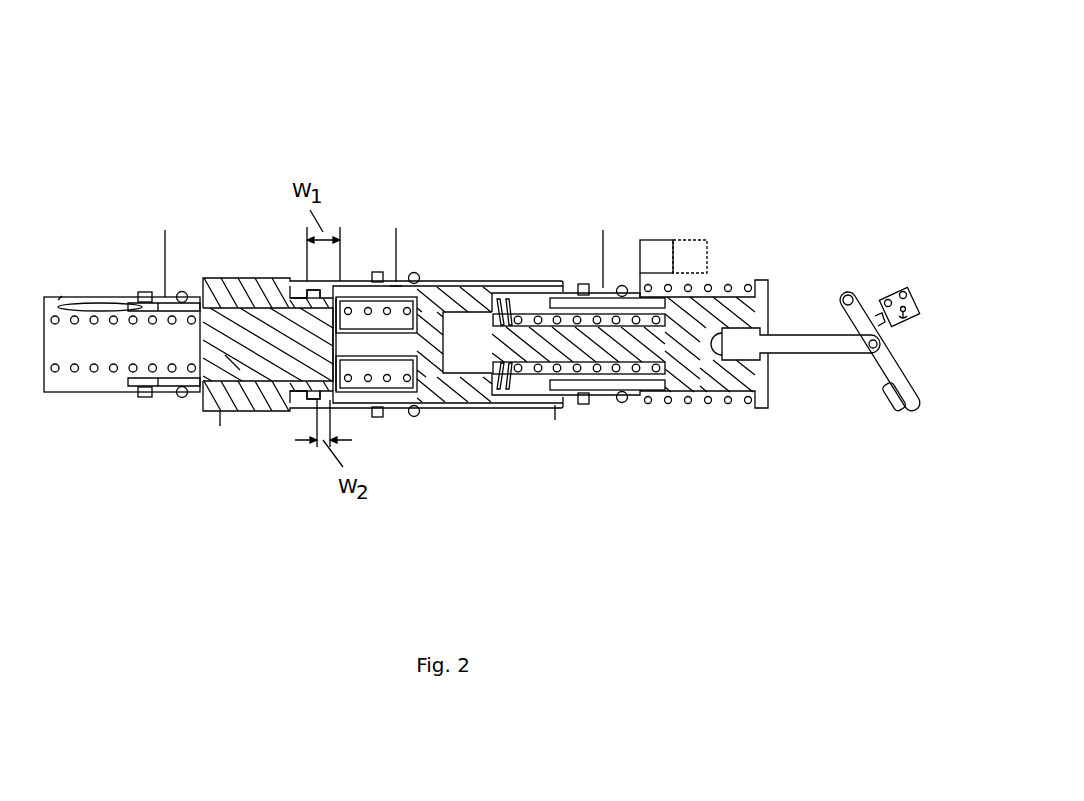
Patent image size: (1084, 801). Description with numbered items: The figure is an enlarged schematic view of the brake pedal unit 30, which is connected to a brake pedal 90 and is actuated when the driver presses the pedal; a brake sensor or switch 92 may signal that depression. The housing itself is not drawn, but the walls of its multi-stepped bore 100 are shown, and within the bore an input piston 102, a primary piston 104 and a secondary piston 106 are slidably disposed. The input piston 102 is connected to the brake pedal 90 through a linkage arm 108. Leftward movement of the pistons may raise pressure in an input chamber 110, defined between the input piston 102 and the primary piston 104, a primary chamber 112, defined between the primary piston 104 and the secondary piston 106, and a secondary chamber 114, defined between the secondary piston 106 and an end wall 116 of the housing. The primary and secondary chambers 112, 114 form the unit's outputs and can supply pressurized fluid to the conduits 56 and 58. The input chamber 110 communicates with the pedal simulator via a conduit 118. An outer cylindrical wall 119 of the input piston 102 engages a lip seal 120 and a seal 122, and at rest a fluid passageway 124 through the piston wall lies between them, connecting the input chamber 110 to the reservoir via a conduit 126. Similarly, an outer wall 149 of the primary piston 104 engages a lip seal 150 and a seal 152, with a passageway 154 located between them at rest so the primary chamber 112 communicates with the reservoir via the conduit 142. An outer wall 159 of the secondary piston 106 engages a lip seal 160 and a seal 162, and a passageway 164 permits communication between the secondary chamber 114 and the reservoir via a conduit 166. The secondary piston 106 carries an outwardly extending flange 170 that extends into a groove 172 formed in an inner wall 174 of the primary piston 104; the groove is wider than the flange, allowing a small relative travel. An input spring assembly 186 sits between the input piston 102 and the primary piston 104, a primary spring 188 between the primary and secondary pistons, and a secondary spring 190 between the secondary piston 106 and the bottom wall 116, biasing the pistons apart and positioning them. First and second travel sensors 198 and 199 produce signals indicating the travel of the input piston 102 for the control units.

The brake pedal unit 30 is at (568, 108).
The conduit 56 is at (62, 423).
The conduit 58 is at (220, 413).
The brake pedal 90 is at (890, 375).
The brake sensor or switch 92 is at (905, 323).
The multi-stepped bore 100 is at (242, 296).
The input piston 102 is at (683, 393).
The primary piston 104 is at (458, 387).
The secondary piston 106 is at (253, 347).
The linkage arm 108 is at (776, 352).
The input chamber 110 is at (523, 297).
The primary chamber 112 is at (270, 290).
The secondary chamber 114 is at (80, 345).
The end wall 116 is at (45, 338).
The conduit 118 is at (555, 415).
The outer cylindrical wall 119 is at (660, 390).
The lip seal 120 is at (583, 285).
The seal 122 is at (622, 286).
The fluid passageway 124 is at (590, 302).
The conduit 126 is at (602, 250).
The conduit 142 is at (396, 247).
The outer wall 149 is at (435, 403).
The lip seal 150 is at (376, 272).
The seal 152 is at (418, 273).
The passageway 154 is at (396, 282).
The outer wall 159 is at (230, 360).
The lip seal 160 is at (147, 292).
The seal 162 is at (183, 292).
The passageway 164 is at (62, 300).
The conduit 166 is at (162, 240).
The flange 170 is at (312, 415).
The groove 172 is at (293, 383).
The inner wall 174 is at (397, 395).
The input spring assembly 186 is at (517, 372).
The primary spring 188 is at (347, 372).
The secondary spring 190 is at (55, 304).
The first travel sensor 198 is at (660, 240).
The second travel sensor 199 is at (707, 240).